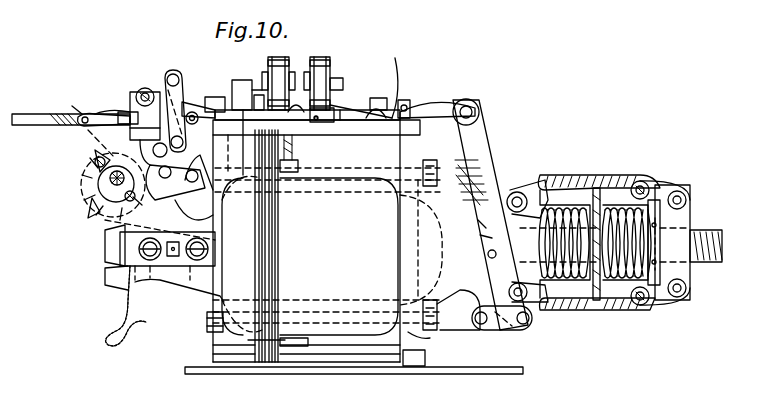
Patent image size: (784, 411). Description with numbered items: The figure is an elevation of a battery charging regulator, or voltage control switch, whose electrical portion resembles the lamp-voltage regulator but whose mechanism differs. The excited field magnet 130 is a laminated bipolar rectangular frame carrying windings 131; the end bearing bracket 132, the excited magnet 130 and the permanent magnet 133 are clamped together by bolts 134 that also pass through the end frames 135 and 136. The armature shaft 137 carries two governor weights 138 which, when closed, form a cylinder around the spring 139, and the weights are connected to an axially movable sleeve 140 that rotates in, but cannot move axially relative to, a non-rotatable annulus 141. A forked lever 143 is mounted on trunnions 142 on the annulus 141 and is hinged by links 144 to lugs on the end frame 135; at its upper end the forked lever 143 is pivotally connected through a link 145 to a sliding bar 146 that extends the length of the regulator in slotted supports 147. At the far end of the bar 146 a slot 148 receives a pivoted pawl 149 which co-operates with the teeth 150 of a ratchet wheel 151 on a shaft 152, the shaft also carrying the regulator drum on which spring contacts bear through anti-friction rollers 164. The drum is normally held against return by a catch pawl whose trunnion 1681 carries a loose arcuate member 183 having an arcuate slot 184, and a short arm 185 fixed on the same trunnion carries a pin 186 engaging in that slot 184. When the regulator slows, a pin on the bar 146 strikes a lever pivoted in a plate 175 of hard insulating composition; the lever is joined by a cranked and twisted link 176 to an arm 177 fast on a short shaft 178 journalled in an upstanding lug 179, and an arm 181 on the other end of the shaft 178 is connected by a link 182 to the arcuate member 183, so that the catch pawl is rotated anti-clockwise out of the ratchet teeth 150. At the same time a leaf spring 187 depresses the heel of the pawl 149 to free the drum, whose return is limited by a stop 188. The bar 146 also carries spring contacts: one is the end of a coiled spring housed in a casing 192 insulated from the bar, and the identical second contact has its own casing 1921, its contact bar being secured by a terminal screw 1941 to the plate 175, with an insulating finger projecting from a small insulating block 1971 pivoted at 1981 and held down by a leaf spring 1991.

The excited field magnet 130 is at (272, 363).
The windings 131 is at (243, 250).
The end bearing bracket 132 is at (205, 292).
The permanent magnet 133 is at (327, 236).
The bolts 134 is at (478, 375).
The end frame 135 is at (413, 345).
The end frame 136 is at (326, 365).
The armature shaft 137 is at (706, 232).
The governor weights 138 is at (585, 178).
The spring 139 is at (597, 297).
The axially movable sleeve 140 is at (548, 180).
The non-rotatable annulus 141 is at (525, 192).
The trunnions 142 is at (488, 254).
The forked lever 143 is at (470, 190).
The links 144 is at (505, 325).
The link 145 is at (470, 110).
The sliding bar 146 is at (22, 116).
The slotted supports 147 is at (418, 104).
The slot 148 is at (88, 128).
The pawl 149 is at (102, 114).
The teeth 150 is at (82, 184).
The ratchet wheel 151 is at (90, 205).
The shaft 152 is at (98, 224).
The anti-friction rollers 164 is at (92, 165).
The trunnion 1681 is at (158, 98).
The plate 175 is at (380, 130).
The cranked and twisted link 176 is at (236, 90).
The arm 177 is at (188, 100).
The short shaft 178 is at (174, 72).
The upstanding lug 179 is at (196, 112).
The arm 181 is at (158, 90).
The link 182 is at (116, 174).
The arcuate member 183 is at (225, 185).
The arcuate slot 184 is at (212, 214).
The short arm 185 is at (204, 191).
The pin 186 is at (172, 177).
The leaf spring 187 is at (122, 114).
The stop 188 is at (128, 232).
The casing 192 is at (288, 60).
The casing 1921 is at (322, 60).
The terminal screw 1941 is at (393, 66).
The block of insulating material 1971 is at (340, 110).
The pivot 1981 is at (318, 128).
The leaf spring 1991 is at (360, 130).